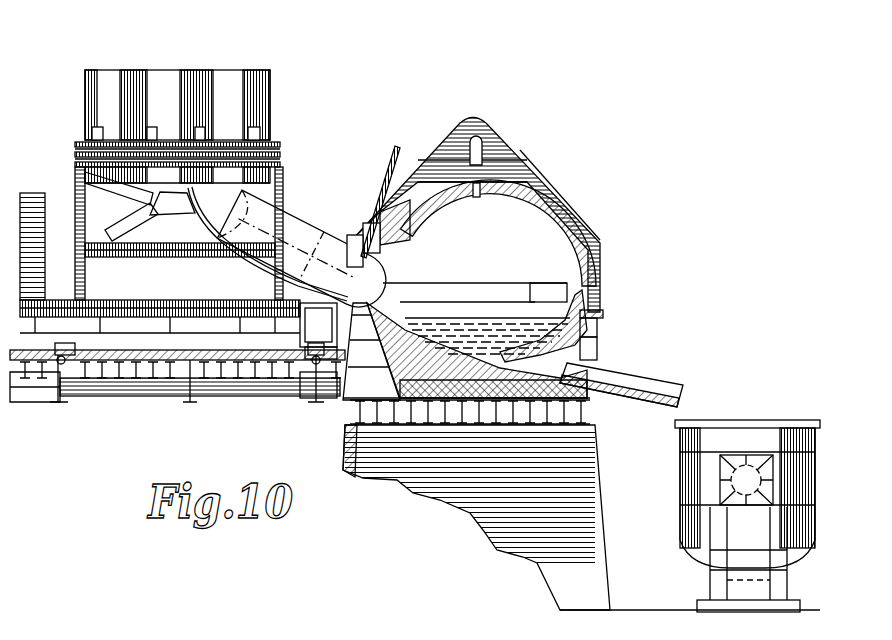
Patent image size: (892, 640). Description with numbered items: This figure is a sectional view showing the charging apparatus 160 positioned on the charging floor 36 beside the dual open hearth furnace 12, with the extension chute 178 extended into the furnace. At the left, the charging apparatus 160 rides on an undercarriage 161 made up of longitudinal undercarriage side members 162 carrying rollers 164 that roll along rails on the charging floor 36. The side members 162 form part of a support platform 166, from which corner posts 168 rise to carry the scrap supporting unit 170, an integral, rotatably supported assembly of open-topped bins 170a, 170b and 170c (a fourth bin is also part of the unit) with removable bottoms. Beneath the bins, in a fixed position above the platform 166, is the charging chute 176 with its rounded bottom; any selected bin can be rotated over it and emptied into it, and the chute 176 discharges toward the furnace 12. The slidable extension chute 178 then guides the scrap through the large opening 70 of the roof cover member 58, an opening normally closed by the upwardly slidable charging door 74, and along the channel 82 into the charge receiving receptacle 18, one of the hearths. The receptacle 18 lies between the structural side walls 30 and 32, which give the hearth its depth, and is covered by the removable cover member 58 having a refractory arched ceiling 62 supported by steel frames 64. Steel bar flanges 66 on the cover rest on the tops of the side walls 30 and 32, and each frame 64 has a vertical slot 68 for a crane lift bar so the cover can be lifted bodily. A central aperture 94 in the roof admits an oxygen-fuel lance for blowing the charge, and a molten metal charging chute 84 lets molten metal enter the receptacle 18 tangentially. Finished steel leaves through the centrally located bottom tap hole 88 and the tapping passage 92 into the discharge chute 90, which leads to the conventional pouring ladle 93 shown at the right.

The furnace 12 is at (372, 503).
The charge receiving receptacle 18 is at (540, 300).
The side wall 30 is at (353, 388).
The side wall 32 is at (593, 352).
The charging floor 36 is at (138, 357).
The cover member 58 is at (533, 193).
The arched ceiling 62 is at (560, 210).
The steel frame 64 is at (512, 147).
The steel bar flange 66 is at (603, 310).
The vertical slot 68 is at (482, 138).
The opening 70 is at (400, 240).
The charging door 74 is at (383, 180).
The channel 82 is at (408, 300).
The molten metal charging chute 84 is at (473, 300).
The bottom tap hole 88 is at (493, 360).
The discharge chute 90 is at (641, 361).
The tapping passage 92 is at (513, 367).
The pouring ladle 93 is at (677, 442).
The central aperture 94 is at (474, 196).
The charging apparatus 160 is at (292, 108).
The undercarriage 161 is at (208, 343).
The undercarriage side member 162 is at (73, 343).
The roller 164 is at (67, 360).
The support platform 166 is at (158, 298).
The corner post 168 is at (77, 188).
The scrap supporting unit 170 is at (186, 72).
The bin 170a is at (255, 80).
The bin 170b is at (200, 78).
The bin 170c is at (128, 57).
The charging chute 176 is at (205, 220).
The extension chute 178 is at (313, 267).